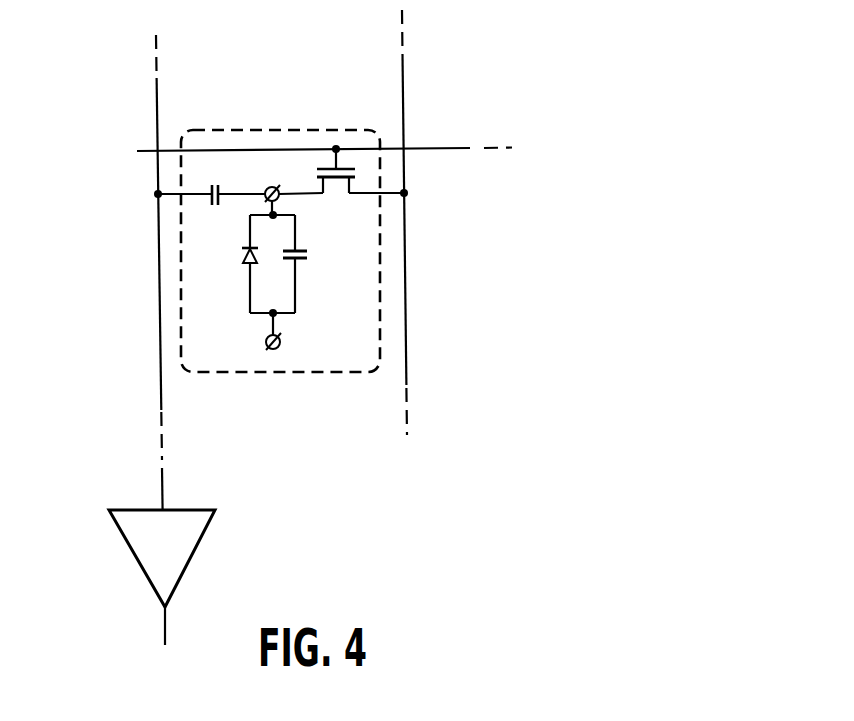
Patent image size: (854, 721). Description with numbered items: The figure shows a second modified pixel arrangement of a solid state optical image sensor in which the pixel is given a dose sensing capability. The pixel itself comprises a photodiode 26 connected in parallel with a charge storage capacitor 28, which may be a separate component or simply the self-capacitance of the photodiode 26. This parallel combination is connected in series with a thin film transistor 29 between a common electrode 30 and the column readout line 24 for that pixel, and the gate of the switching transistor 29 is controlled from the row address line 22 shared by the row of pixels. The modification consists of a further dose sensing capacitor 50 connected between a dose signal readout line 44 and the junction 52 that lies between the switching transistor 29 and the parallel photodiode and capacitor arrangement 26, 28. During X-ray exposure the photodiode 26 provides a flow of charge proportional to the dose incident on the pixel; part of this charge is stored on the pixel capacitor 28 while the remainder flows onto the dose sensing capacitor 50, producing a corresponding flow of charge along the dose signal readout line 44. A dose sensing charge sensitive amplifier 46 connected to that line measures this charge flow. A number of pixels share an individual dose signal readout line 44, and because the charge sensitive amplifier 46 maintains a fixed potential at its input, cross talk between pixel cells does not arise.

The row address line 22 is at (432, 148).
The column readout line 24 is at (407, 363).
The photodiode 26 is at (255, 262).
The charge storage capacitor 28 is at (307, 253).
The thin film transistor 29 is at (353, 177).
The common electrode 30 is at (280, 340).
The dose signal readout line 44 is at (161, 392).
The dose sensing charge sensitive amplifier 46 is at (145, 553).
The dose sensing capacitor 50 is at (211, 203).
The junction 52 is at (276, 186).